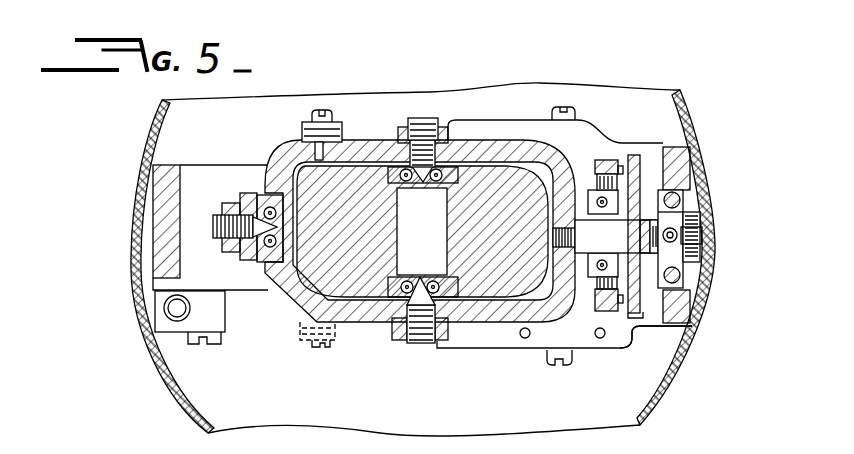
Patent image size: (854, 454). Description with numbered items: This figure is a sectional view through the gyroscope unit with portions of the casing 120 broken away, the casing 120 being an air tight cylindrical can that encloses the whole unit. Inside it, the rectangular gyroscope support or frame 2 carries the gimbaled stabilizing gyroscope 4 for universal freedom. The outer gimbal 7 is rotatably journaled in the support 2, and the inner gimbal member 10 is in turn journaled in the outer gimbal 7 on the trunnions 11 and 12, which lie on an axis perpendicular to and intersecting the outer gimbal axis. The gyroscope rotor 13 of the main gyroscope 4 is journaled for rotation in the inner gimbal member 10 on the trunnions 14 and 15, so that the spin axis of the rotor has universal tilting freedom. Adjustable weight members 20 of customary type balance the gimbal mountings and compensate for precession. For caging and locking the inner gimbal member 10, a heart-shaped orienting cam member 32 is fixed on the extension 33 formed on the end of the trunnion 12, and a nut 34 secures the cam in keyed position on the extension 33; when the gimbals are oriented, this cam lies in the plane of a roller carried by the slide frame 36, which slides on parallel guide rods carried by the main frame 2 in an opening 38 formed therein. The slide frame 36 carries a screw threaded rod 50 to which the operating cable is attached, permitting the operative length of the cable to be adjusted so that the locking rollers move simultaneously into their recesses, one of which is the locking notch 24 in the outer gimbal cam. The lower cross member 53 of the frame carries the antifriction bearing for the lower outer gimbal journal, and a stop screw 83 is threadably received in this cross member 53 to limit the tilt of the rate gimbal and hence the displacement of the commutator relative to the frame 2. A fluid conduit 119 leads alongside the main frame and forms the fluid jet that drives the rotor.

The gyroscope support or frame 2 is at (258, 292).
The stabilizing gyroscope 4 is at (352, 379).
The outer gimbal 7 is at (244, 262).
The inner gimbal member 10 is at (521, 146).
The trunnion 11 is at (242, 194).
The trunnion 12 is at (596, 226).
The gyroscope rotor 13 is at (364, 174).
The rotor trunnion 14 is at (419, 135).
The rotor trunnion 15 is at (400, 332).
The adjustable weight members 20 is at (300, 127).
The locking notch 24 is at (576, 108).
The heart-shaped orienting cam member 32 is at (637, 328).
The extension 33 is at (681, 210).
The nut 34 is at (642, 214).
The slide frame 36 is at (712, 245).
The opening 38 is at (676, 294).
The screw threaded rod 50 is at (701, 223).
The lower cross member 53 is at (192, 178).
The stop screw 83 is at (571, 352).
The fluid conduit 119 is at (190, 317).
The casing 120 is at (688, 360).